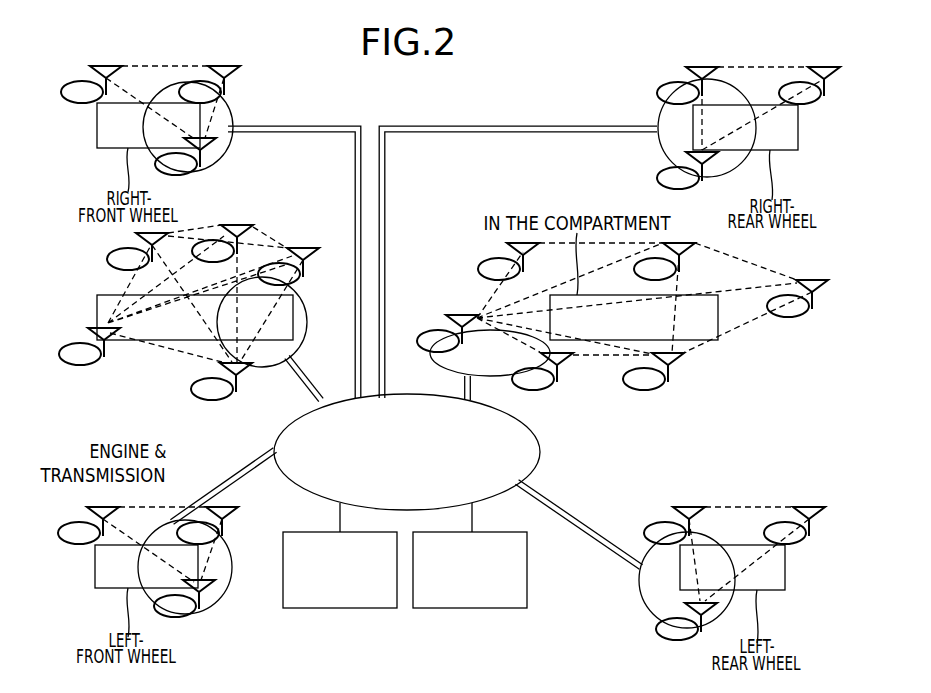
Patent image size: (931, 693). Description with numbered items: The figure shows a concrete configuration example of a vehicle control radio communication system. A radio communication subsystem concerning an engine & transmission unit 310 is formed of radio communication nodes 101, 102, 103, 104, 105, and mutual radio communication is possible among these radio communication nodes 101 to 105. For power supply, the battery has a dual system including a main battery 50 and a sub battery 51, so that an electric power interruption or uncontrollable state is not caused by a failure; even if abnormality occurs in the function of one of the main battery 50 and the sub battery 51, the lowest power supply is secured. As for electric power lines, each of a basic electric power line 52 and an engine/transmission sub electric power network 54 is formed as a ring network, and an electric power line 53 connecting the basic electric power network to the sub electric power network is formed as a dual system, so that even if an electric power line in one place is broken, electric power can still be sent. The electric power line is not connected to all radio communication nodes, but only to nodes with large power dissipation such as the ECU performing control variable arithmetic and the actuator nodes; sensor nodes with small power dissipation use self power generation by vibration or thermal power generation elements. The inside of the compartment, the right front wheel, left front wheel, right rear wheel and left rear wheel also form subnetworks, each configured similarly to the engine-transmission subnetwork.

The radio communication node 101 is at (110, 260).
The radio communication node 102 is at (213, 243).
The radio communication node 103 is at (85, 366).
The radio communication node 104 is at (212, 402).
The radio communication node 105 is at (281, 262).
The engine & transmission unit 310 is at (125, 341).
The engine/transmission sub electric power network 54 is at (307, 302).
The electric power line 53 is at (305, 378).
The basic electric power line 52 is at (540, 452).
The main battery 50 is at (340, 608).
The sub battery 51 is at (472, 608).